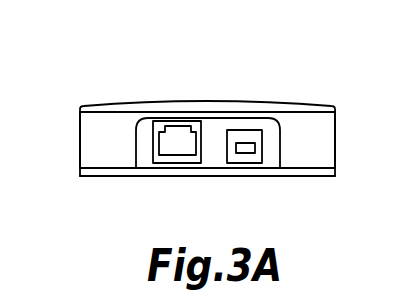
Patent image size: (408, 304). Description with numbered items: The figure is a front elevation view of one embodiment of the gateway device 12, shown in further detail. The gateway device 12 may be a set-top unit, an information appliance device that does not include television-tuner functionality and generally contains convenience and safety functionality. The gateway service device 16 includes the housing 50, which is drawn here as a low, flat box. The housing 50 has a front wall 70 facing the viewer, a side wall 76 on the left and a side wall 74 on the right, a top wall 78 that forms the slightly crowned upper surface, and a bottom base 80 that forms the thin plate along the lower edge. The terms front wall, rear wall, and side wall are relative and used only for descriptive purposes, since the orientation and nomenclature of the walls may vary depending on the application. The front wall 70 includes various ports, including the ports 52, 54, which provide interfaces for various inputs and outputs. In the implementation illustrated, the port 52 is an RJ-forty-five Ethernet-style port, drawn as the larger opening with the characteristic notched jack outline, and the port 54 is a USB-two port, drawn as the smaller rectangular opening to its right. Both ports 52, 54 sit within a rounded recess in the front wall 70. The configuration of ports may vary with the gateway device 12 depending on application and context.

The gateway device 12 is at (323, 78).
The gateway service device 16 is at (95, 104).
The top wall 78 is at (209, 98).
The side wall 76 is at (80, 137).
The side wall 74 is at (336, 126).
The front wall 70 is at (322, 155).
The housing 50 is at (80, 162).
The bottom base 80 is at (100, 177).
The port 52 is at (177, 157).
The port 54 is at (245, 157).